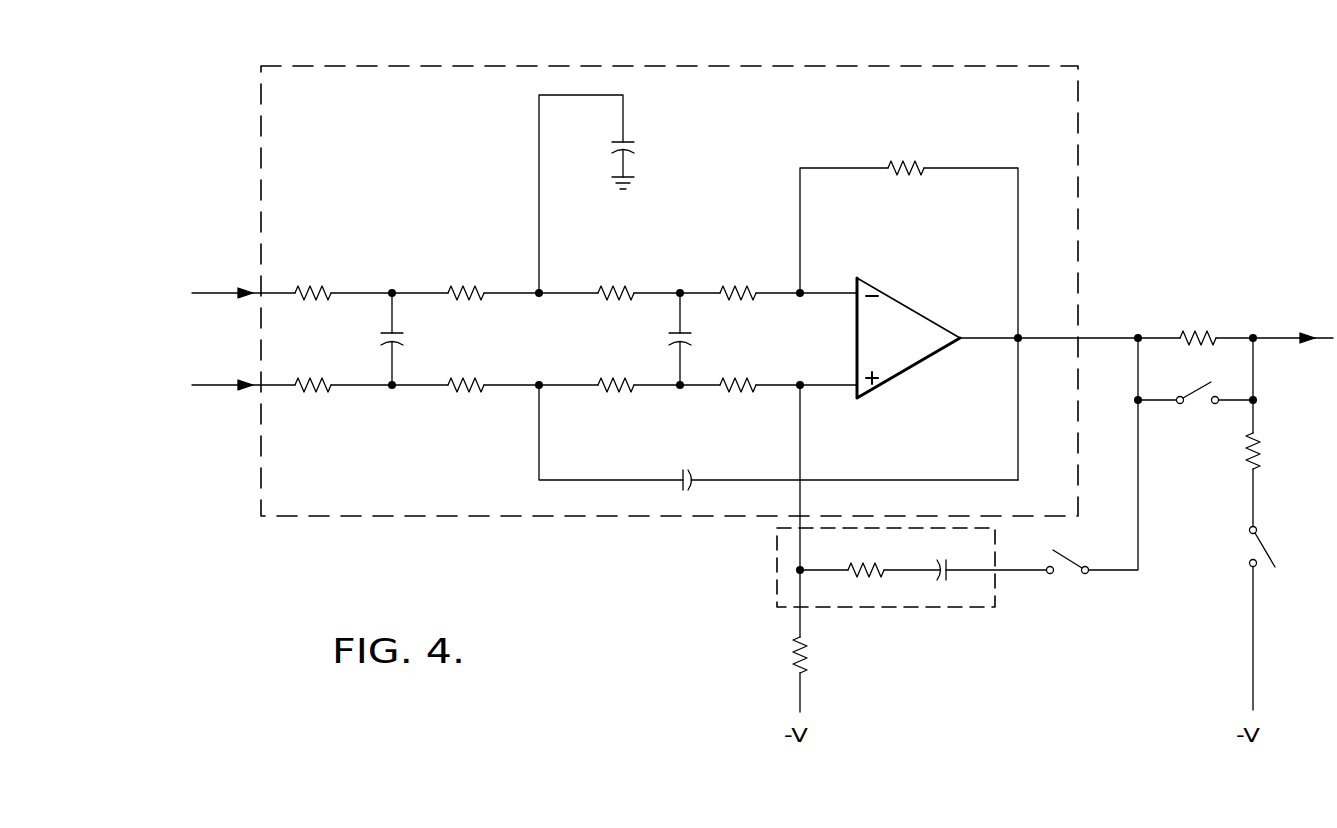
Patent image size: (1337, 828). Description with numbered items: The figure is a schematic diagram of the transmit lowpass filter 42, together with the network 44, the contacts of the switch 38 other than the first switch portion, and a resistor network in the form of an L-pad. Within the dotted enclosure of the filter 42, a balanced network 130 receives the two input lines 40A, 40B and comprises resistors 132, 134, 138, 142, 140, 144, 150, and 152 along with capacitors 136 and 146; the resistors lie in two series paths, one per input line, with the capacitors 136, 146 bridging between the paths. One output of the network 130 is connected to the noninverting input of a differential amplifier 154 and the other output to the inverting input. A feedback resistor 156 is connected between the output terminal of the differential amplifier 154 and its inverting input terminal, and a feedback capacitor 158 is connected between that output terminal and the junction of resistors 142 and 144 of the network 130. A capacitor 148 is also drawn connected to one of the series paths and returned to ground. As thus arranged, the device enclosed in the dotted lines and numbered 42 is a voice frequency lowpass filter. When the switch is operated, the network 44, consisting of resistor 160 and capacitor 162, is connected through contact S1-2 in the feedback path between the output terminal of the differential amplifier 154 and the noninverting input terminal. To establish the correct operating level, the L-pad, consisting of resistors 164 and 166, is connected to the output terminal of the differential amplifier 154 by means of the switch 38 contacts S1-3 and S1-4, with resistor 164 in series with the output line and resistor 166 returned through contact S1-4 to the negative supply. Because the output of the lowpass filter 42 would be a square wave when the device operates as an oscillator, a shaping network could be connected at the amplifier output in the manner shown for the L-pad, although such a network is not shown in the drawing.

The switch 38 is at (1186, 610).
The first input signal line 40A is at (231, 272).
The second input signal line 40B is at (225, 389).
The transmit lowpass filter 42 is at (331, 123).
The network 44 is at (836, 555).
The balanced network 130 is at (375, 464).
The resistor 132 is at (310, 288).
The resistor 134 is at (312, 391).
The capacitor 136 is at (402, 340).
The resistor 138 is at (463, 288).
The resistor 140 is at (613, 288).
The resistor 142 is at (467, 391).
The resistor 144 is at (615, 391).
The capacitor 146 is at (692, 340).
The grounded capacitor 148 is at (628, 141).
The resistor 150 is at (734, 288).
The resistor 152 is at (738, 391).
The differential amplifier 154 is at (868, 282).
The feedback resistor 156 is at (906, 161).
The feedback capacitor 158 is at (692, 474).
The resistor 160 is at (870, 576).
The capacitor 162 is at (941, 559).
The resistor 164 is at (1214, 328).
The resistor 166 is at (1262, 445).
The switch contact S1-2 is at (1089, 576).
The switch contact S1-3 is at (1195, 453).
The switch contact S1-4 is at (1283, 615).